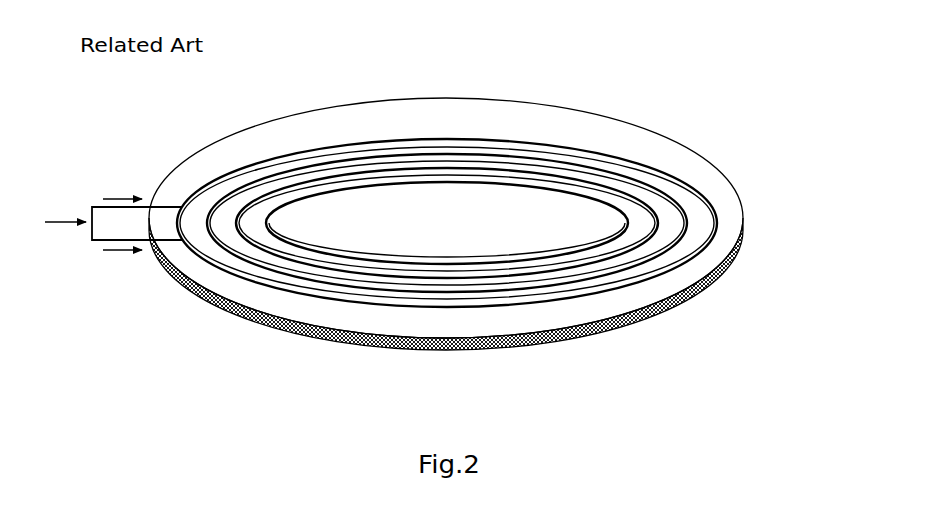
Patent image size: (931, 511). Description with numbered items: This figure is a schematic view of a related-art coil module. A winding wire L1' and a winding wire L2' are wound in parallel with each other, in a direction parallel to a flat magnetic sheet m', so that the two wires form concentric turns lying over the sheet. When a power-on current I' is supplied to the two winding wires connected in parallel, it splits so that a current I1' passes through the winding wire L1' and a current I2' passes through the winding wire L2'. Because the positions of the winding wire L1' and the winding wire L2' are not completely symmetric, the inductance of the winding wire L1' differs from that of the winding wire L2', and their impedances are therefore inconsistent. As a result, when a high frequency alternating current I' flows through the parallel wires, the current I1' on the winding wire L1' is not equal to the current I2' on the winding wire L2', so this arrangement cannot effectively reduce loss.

The magnetic sheet m' is at (486, 224).
The winding wire L2' is at (490, 221).
The winding wire L1' is at (499, 223).
The power-on current I' is at (65, 207).
The current passing through the winding wire L2' I2' is at (122, 186).
The current passing through the winding wire L1' I1' is at (122, 265).